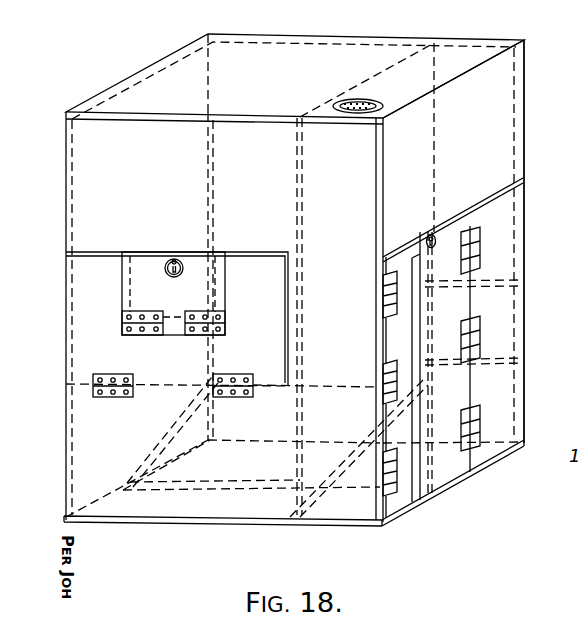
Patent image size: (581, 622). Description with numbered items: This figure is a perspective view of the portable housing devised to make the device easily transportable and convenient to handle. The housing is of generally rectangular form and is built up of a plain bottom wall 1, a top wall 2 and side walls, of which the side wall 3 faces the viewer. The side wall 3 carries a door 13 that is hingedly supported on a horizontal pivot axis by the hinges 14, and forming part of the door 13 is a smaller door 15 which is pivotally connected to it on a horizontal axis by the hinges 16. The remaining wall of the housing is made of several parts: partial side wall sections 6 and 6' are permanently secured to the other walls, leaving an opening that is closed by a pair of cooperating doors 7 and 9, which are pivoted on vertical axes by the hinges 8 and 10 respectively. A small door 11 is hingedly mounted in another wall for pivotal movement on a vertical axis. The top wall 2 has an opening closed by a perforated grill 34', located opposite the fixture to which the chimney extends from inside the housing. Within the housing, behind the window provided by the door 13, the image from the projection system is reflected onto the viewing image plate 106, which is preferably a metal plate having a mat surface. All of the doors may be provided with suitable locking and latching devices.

The bottom wall 1 is at (386, 516).
The top wall 2 is at (475, 52).
The side wall 3 is at (86, 163).
The partial side wall section 6 is at (453, 480).
The partial side wall section 6' is at (474, 241).
The door 7 is at (450, 468).
The hinges 8 is at (479, 240).
The door 9 is at (414, 497).
The hinges 10 is at (381, 402).
The small door 11 is at (521, 296).
The door 13 is at (86, 318).
The hinges 14 is at (113, 398).
The smaller door 15 is at (150, 256).
The hinges 16 is at (158, 333).
The perforated grill 34' is at (374, 95).
The viewing image plate 106 is at (333, 380).